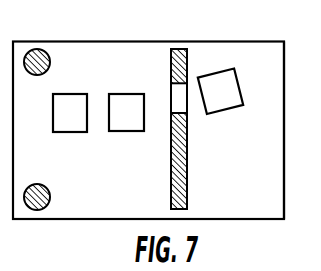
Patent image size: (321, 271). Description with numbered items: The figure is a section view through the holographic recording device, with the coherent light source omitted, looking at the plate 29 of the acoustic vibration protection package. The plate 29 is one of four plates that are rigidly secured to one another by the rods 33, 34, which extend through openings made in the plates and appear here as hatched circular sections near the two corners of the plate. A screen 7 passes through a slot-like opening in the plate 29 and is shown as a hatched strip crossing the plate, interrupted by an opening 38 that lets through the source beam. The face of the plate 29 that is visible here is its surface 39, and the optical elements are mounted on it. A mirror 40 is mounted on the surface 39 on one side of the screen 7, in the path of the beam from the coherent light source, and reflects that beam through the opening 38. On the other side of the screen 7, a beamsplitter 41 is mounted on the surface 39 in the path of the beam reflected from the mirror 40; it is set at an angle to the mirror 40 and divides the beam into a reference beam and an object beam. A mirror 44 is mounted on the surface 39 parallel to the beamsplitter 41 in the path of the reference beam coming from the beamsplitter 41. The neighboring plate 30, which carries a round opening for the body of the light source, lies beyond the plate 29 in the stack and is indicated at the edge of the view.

The plate 29 is at (258, 42).
The surface of the plate 39 is at (273, 127).
The rod 33 is at (50, 62).
The rod 34 is at (50, 197).
The mirror 44 is at (70, 121).
The beamsplitter 41 is at (129, 103).
The screen 7 is at (187, 193).
The opening 38 is at (178, 108).
The mirror 40 is at (232, 95).
The plate 30 is at (271, 270).